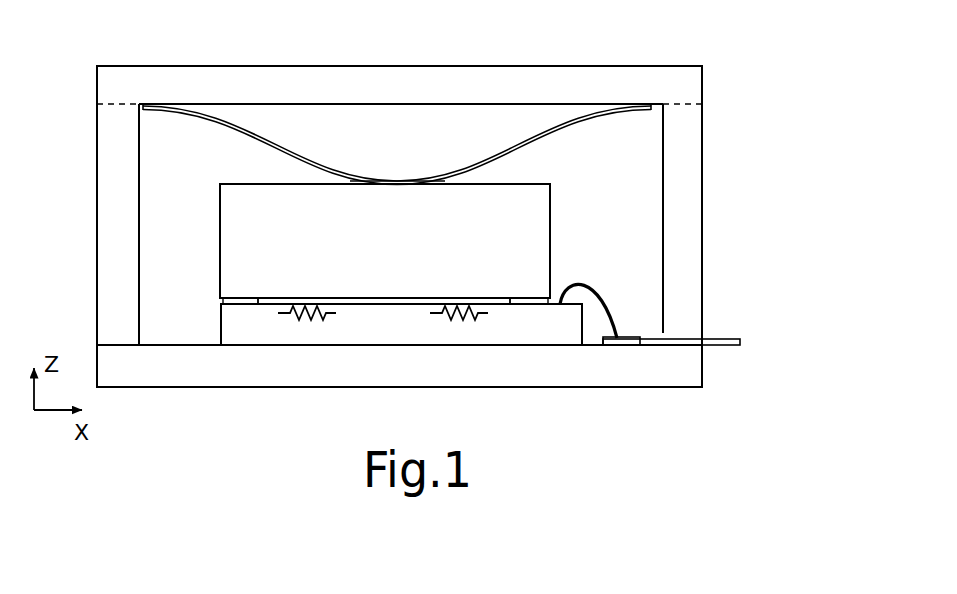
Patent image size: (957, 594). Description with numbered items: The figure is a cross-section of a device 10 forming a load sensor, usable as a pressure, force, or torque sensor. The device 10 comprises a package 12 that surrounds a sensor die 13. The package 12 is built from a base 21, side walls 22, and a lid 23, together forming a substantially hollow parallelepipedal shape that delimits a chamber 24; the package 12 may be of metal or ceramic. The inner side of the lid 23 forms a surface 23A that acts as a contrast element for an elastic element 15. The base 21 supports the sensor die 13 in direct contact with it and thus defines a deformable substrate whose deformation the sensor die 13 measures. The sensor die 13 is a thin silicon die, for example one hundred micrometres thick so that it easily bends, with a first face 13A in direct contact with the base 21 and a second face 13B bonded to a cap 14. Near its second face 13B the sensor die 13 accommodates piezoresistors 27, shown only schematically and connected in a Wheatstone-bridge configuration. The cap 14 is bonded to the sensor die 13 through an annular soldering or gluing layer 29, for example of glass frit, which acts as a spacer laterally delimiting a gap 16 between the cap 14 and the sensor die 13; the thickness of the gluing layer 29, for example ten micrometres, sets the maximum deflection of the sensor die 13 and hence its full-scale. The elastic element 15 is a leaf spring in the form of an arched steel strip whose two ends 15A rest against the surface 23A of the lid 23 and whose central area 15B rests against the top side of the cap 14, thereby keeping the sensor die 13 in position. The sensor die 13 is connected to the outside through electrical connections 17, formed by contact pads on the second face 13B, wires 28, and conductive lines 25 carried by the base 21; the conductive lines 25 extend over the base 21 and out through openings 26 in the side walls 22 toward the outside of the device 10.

The device 10 is at (449, 219).
The package 12 is at (706, 160).
The sensor die 13 is at (372, 303).
The first face 13A is at (271, 339).
The second face 13B is at (243, 294).
The cap 14 is at (274, 225).
The elastic element 15 is at (397, 144).
The ends 15A is at (157, 114).
The central area 15B is at (397, 179).
The gap 16 is at (339, 301).
The electrical connections 17 is at (605, 289).
The base 21 is at (612, 373).
The side walls 22 is at (698, 198).
The lid 23 is at (516, 72).
The surface 23A is at (324, 107).
The chamber 24 is at (624, 225).
The conductive lines 25 is at (640, 342).
The openings 26 is at (706, 335).
The piezoresistors 27 is at (332, 322).
The wires 28 is at (563, 300).
The gluing layer 29 is at (254, 297).